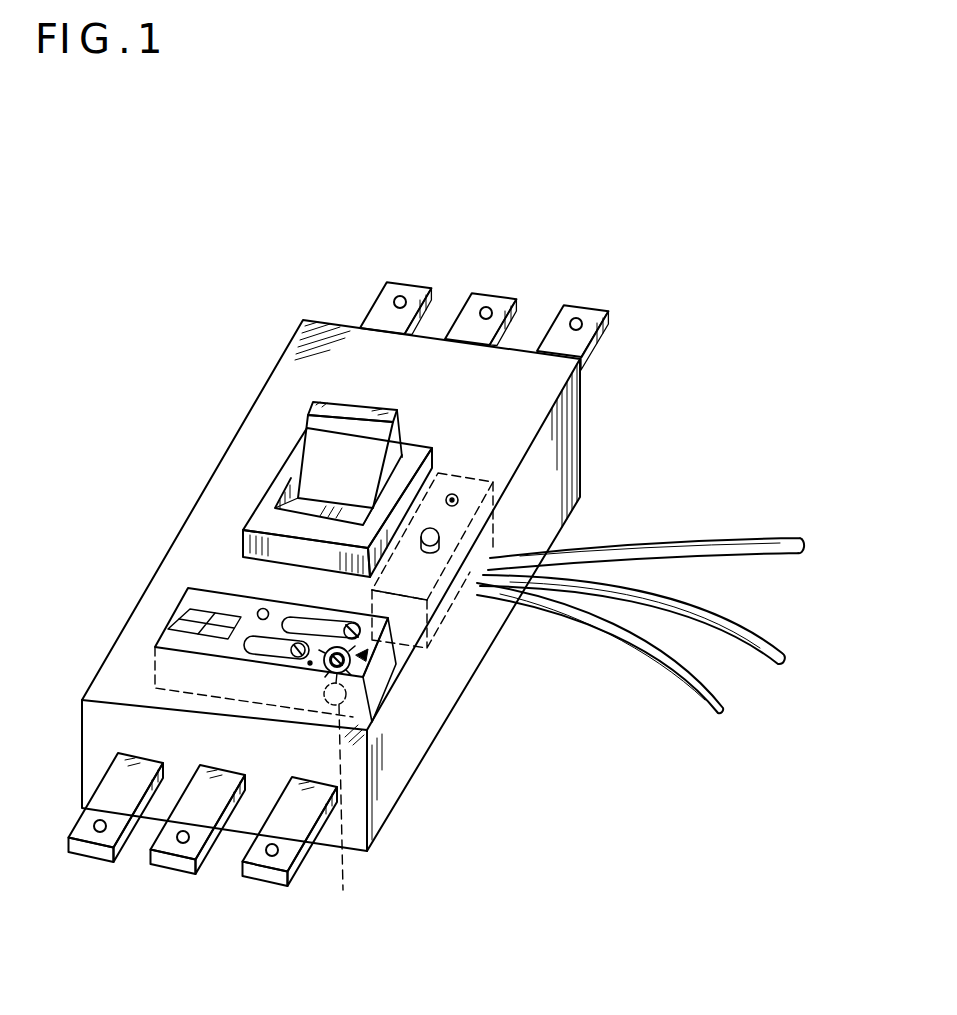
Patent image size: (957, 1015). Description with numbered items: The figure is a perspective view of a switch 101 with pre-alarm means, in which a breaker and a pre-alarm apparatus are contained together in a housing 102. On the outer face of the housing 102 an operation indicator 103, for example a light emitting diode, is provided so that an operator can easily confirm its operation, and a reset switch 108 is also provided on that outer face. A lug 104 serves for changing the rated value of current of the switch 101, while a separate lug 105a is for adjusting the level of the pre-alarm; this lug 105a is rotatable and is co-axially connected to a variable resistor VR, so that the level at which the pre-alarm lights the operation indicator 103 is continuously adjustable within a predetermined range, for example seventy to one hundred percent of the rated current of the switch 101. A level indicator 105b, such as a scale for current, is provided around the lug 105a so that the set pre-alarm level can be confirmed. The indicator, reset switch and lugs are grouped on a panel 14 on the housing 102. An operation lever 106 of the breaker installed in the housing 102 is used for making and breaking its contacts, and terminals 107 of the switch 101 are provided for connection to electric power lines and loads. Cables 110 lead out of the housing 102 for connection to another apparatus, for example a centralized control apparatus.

The display panel 14 is at (263, 610).
The switch 101 is at (592, 380).
The housing 102 is at (582, 413).
The operation indicator 103 is at (453, 493).
The lug 104 is at (360, 647).
The lug 105a is at (340, 665).
The level indicator 105b is at (352, 660).
The operation lever 106 is at (337, 400).
The terminals 107 is at (405, 283).
The reset switch 108 is at (437, 535).
The cables 110 is at (698, 673).
The variable resistor VR is at (349, 799).